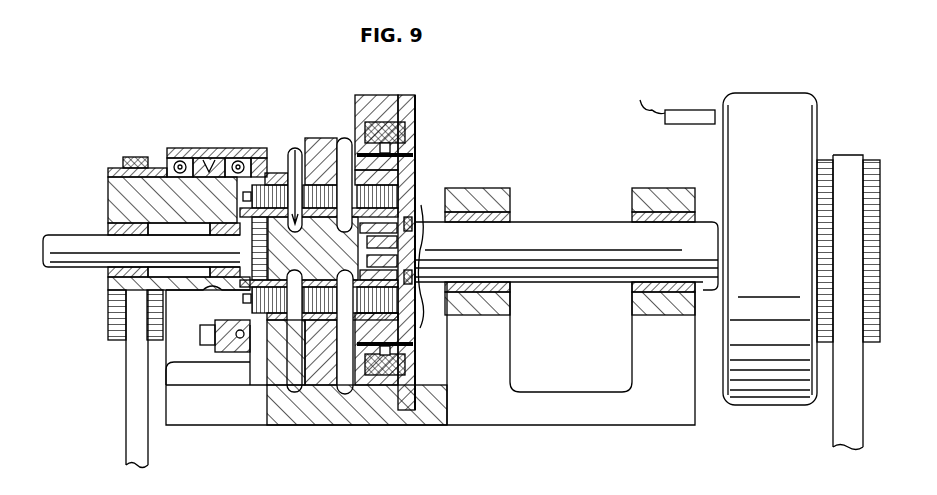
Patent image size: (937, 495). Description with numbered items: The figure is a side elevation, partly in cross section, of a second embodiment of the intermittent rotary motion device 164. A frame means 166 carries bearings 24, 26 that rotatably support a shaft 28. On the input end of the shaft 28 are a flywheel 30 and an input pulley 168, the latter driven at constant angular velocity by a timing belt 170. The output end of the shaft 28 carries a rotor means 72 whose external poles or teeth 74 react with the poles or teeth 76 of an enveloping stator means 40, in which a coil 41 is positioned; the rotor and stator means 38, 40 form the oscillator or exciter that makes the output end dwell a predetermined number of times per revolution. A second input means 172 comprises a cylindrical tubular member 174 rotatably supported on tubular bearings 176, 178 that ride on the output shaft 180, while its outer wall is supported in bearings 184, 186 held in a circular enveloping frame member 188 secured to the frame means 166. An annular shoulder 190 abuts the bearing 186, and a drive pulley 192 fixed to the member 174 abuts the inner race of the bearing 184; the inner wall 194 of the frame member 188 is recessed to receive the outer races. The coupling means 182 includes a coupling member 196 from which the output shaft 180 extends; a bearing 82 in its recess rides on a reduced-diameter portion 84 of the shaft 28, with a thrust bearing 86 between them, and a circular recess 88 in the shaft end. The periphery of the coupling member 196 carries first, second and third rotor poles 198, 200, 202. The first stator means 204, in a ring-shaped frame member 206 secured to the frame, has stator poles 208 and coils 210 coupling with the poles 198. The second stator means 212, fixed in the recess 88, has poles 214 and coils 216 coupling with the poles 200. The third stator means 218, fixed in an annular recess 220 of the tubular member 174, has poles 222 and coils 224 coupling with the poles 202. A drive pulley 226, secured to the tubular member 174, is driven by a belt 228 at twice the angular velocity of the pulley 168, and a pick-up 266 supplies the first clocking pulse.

The bearing 24 is at (512, 210).
The bearing 26 is at (633, 215).
The shaft 28 is at (570, 230).
The flywheel 30 is at (772, 95).
The rotor means 38 is at (406, 325).
The stator means 40 is at (389, 122).
The coil 41 is at (415, 108).
The rotor means 72 is at (412, 163).
The external poles or teeth 74 is at (417, 157).
The poles or teeth 76 is at (405, 138).
The bearing 82 is at (452, 252).
The reduced-diameter portion 84 is at (396, 250).
The thrust bearing 86 is at (410, 212).
The circular recess 88 is at (406, 298).
The intermittent rotary motion device 164 is at (473, 122).
The frame means 166 is at (518, 430).
The input pulley 168 is at (870, 160).
The timing belt 170 is at (835, 440).
The second input means 172 is at (92, 160).
The cylindrical tubular member 174 is at (118, 190).
The bearing 176 is at (197, 158).
The bearing 178 is at (110, 228).
The output shaft 180 is at (56, 240).
The coupling means 182 is at (294, 185).
The bearing 184 is at (168, 165).
The bearing 186 is at (243, 158).
The circular enveloping frame member 188 is at (183, 158).
The annular shoulder 190 is at (250, 173).
The drive pulley 192 is at (108, 165).
The inner wall 194 is at (208, 160).
The coupling member 196 is at (252, 250).
The poles or teeth of first rotor means 198 is at (268, 405).
The poles or teeth of second rotor means 200 is at (430, 380).
The poles or teeth of third rotor means 202 is at (262, 373).
The first stator means 204 is at (318, 150).
The ring-shaped frame member 206 is at (295, 160).
The stator poles or teeth 208 is at (315, 303).
The coils 210 is at (268, 372).
The second stator means 212 is at (350, 160).
The stator poles 214 is at (430, 410).
The coils 216 is at (447, 305).
The third stator means 218 is at (283, 195).
The annular recess 220 is at (262, 300).
The poles or teeth 222 is at (222, 335).
The coils 224 is at (218, 328).
The drive pulley 226 is at (110, 318).
The belt 228 is at (125, 402).
The pick-up 266 is at (697, 112).